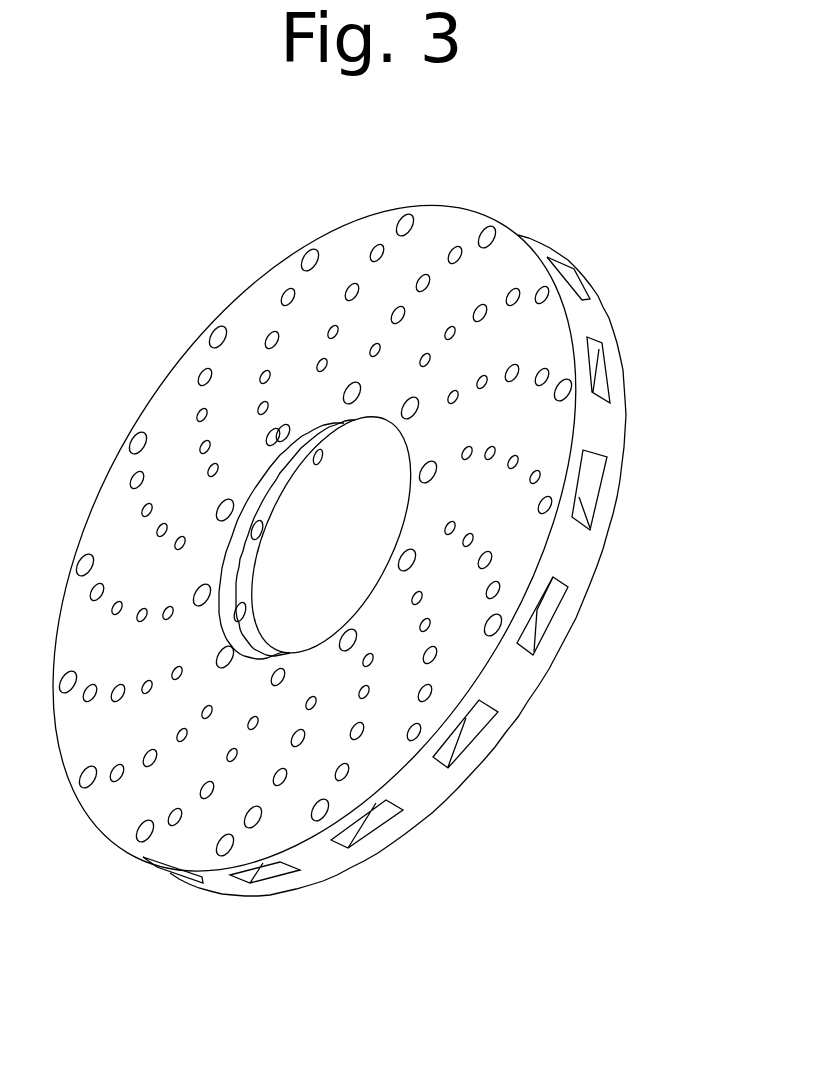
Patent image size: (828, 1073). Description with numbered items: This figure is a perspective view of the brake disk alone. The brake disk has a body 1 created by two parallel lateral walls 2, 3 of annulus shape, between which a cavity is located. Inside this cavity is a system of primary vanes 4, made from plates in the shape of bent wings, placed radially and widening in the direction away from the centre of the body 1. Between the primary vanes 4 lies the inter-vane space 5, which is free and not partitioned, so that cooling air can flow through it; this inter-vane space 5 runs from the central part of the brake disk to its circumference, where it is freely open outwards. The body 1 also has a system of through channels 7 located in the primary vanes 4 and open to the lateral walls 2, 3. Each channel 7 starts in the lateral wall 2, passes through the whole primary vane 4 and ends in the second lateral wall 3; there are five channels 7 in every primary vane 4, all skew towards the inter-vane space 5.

The body 1 is at (280, 263).
The lateral wall 2 is at (277, 548).
The lateral wall 3 is at (545, 333).
The primary vane 4 is at (582, 515).
The inter-vane space 5 is at (550, 605).
The through channel 7 is at (514, 461).